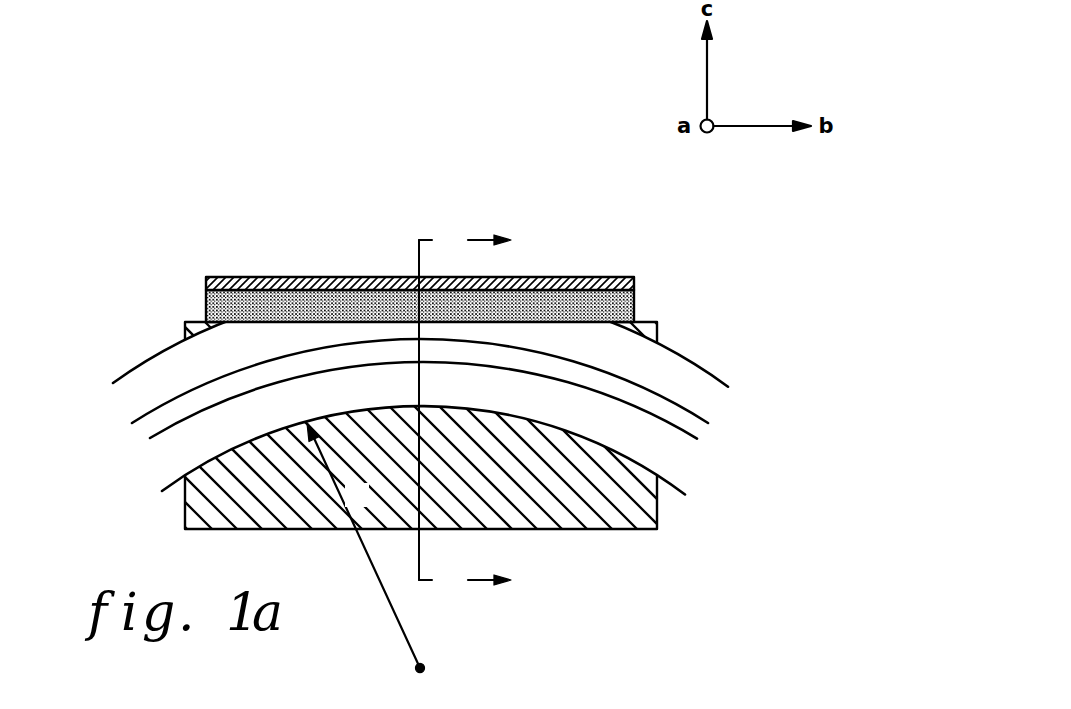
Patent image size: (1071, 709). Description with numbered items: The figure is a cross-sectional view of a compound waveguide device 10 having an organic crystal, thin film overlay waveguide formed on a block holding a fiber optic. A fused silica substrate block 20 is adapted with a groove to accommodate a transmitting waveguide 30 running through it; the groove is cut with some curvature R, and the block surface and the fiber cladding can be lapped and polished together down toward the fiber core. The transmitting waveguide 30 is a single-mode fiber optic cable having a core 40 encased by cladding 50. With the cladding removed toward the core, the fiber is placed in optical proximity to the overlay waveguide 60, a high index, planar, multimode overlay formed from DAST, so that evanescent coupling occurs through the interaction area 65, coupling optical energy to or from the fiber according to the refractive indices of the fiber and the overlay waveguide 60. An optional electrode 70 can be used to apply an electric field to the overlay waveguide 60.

The compound waveguide device 10 is at (431, 430).
The fused silica substrate block 20 is at (477, 479).
The transmitting waveguide 30 is at (444, 389).
The core 40 is at (692, 423).
The cladding 50 is at (702, 392).
The overlay waveguide 60 is at (637, 304).
The interaction area 65 is at (266, 332).
The electrode 70 is at (262, 277).